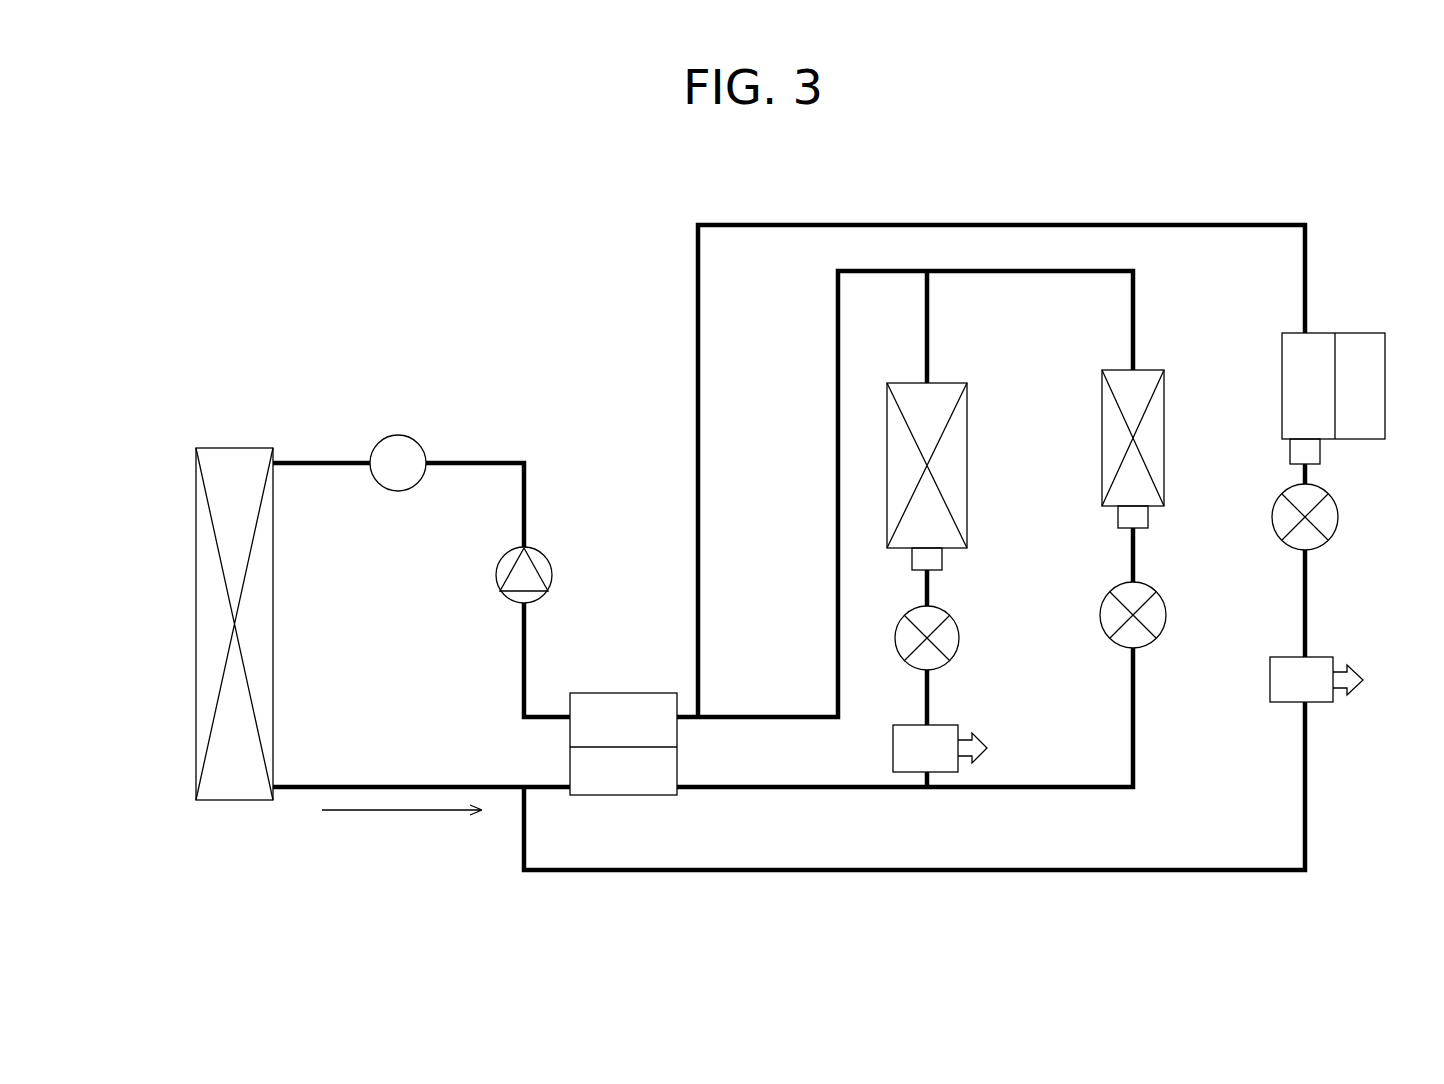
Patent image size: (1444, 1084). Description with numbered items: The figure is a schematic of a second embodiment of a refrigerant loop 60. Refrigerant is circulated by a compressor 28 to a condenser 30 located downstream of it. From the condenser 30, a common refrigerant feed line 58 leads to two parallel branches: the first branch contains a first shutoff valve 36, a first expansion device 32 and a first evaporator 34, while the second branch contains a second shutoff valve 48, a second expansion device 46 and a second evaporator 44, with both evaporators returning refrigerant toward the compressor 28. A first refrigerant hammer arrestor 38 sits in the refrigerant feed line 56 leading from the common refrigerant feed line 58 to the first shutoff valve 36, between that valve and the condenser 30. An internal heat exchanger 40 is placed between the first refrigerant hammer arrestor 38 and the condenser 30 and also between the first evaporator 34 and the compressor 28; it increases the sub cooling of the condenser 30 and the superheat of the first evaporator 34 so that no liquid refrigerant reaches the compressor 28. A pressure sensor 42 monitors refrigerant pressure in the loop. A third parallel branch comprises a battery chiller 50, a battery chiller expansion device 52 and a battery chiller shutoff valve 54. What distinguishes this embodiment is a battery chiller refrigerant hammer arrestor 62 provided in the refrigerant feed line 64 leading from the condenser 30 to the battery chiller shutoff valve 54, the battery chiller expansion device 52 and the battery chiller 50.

The compressor 28 is at (548, 560).
The condenser 30 is at (196, 650).
The first expansion device 32 is at (942, 562).
The first evaporator 34 is at (946, 383).
The first shutoff valve 36 is at (958, 648).
The first refrigerant hammer arrestor 38 is at (893, 750).
The internal heat exchanger 40 is at (622, 693).
The pressure sensor 42 is at (383, 440).
The second evaporator 44 is at (1147, 372).
The second expansion device 46 is at (1148, 522).
The second shutoff valve 48 is at (1165, 622).
The battery chiller 50 is at (1365, 335).
The battery chiller expansion device 52 is at (1320, 460).
The battery chiller shutoff valve 54 is at (1335, 540).
The refrigerant feed line 56 is at (930, 692).
The common refrigerant feed line 58 is at (805, 790).
The refrigerant loop 60 is at (1128, 170).
The battery chiller refrigerant hammer arrestor 62 is at (1318, 700).
The refrigerant feed line 64 is at (985, 872).